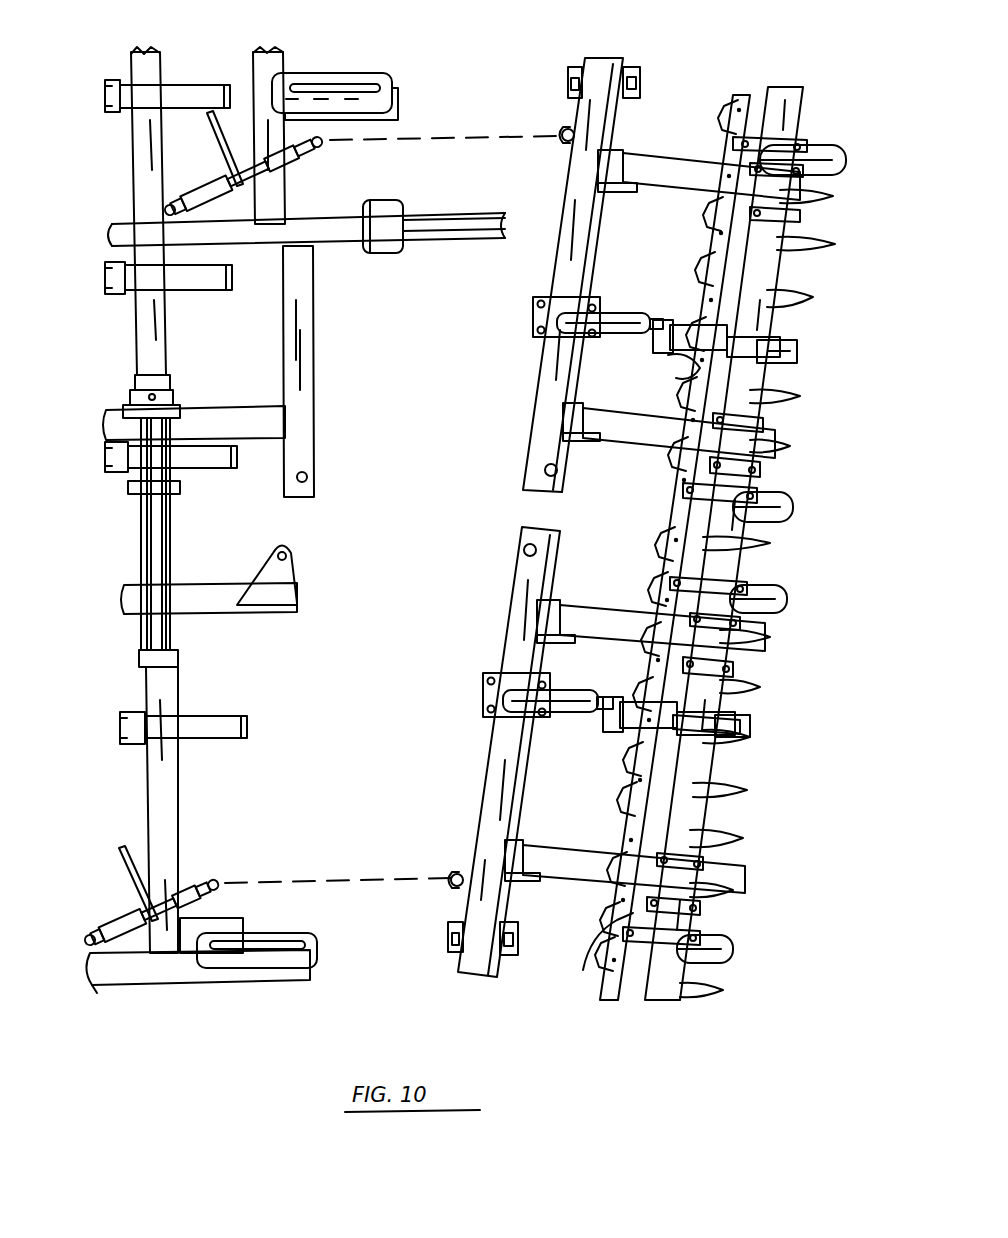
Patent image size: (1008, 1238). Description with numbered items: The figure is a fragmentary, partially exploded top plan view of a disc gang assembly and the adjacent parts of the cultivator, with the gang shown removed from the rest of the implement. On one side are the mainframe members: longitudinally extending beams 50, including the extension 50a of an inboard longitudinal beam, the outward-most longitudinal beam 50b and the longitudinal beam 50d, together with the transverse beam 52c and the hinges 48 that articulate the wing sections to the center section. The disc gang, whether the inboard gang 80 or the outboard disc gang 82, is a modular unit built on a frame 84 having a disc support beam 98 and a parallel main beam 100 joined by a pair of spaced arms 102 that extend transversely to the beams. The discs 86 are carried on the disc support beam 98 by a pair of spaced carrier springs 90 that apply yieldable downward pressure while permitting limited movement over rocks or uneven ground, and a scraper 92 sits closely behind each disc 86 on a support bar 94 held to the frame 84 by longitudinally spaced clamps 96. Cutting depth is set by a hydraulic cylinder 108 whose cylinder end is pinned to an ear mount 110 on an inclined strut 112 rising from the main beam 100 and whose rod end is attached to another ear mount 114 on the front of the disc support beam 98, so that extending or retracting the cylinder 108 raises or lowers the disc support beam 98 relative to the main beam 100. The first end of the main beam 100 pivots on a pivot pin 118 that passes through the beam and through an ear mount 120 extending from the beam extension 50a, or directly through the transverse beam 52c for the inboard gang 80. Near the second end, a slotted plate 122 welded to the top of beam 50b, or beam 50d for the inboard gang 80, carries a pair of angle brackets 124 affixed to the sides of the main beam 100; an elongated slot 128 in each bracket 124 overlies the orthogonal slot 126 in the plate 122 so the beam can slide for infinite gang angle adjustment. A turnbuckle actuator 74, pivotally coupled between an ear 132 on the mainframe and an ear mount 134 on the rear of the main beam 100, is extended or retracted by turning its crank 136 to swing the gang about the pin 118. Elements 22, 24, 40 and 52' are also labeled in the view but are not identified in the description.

The disc gang assembly 22 is at (808, 10).
The frame 24 is at (424, 24).
The tool bar 40 is at (445, 225).
The hinges 48 is at (183, 537).
The longitudinally extending beams 50 is at (220, 413).
The longitudinal beam extension 50a is at (225, 614).
The outward-most longitudinal beam 50b is at (216, 982).
The longitudinal beam 50d is at (400, 103).
The upright post 52' is at (184, 500).
The transverse beam 52c is at (314, 350).
The actuator 74 is at (228, 178).
The inboard gang 80 is at (828, 293).
The outboard disc gang 82 is at (848, 752).
The frame 84 is at (520, 405).
The discs 86 is at (810, 248).
The carrier springs 90 is at (846, 158).
The scraper 92 is at (677, 372).
The support bar 94 is at (745, 97).
The clamps 96 is at (785, 142).
The disc support beam 98 is at (790, 97).
The main beam 100 is at (558, 263).
The arms 102 is at (658, 167).
The hydraulic cylinder 108 is at (683, 312).
The ear mount 110 is at (652, 319).
The strut 112 is at (613, 315).
The ear mount 114 is at (800, 215).
The pivot pin 118 is at (558, 472).
The ear mount 120 is at (293, 558).
The slotted plate 122 is at (392, 80).
The angle brackets 124 is at (575, 63).
The slot 126 is at (305, 85).
The elongated slot 128 is at (568, 83).
The ear 132 is at (98, 943).
The ear mount 134 is at (562, 132).
The crank 136 is at (210, 125).